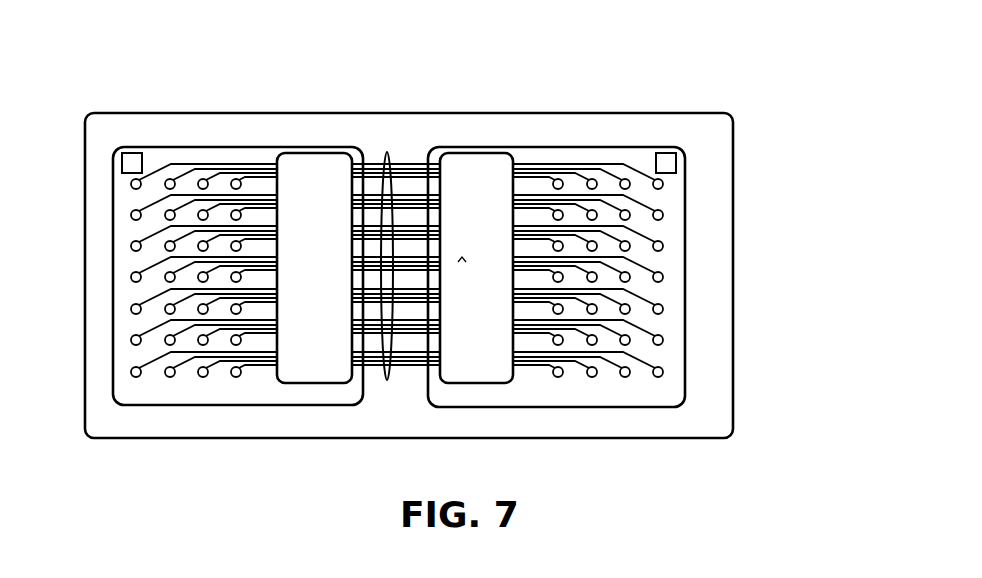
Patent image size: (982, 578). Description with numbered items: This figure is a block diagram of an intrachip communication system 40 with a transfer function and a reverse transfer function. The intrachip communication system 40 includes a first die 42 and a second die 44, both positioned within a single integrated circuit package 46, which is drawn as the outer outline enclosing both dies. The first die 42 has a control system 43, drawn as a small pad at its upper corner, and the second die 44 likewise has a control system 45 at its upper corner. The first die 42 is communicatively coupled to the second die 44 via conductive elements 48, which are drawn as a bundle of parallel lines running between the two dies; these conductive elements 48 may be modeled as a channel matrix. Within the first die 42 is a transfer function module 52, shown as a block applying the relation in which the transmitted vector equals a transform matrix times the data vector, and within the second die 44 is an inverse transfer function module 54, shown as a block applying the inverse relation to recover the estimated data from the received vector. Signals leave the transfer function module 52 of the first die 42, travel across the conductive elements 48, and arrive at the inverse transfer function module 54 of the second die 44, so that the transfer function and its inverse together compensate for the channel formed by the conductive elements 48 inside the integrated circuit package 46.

The intrachip communication system 40 is at (738, 90).
The first die 42 is at (203, 147).
The control system 43 is at (122, 163).
The second die 44 is at (652, 147).
The control system 45 is at (678, 161).
The integrated circuit package 46 is at (734, 292).
The conductive elements 48 is at (388, 175).
The transfer function module 52 is at (313, 172).
The inverse transfer function module 54 is at (477, 172).